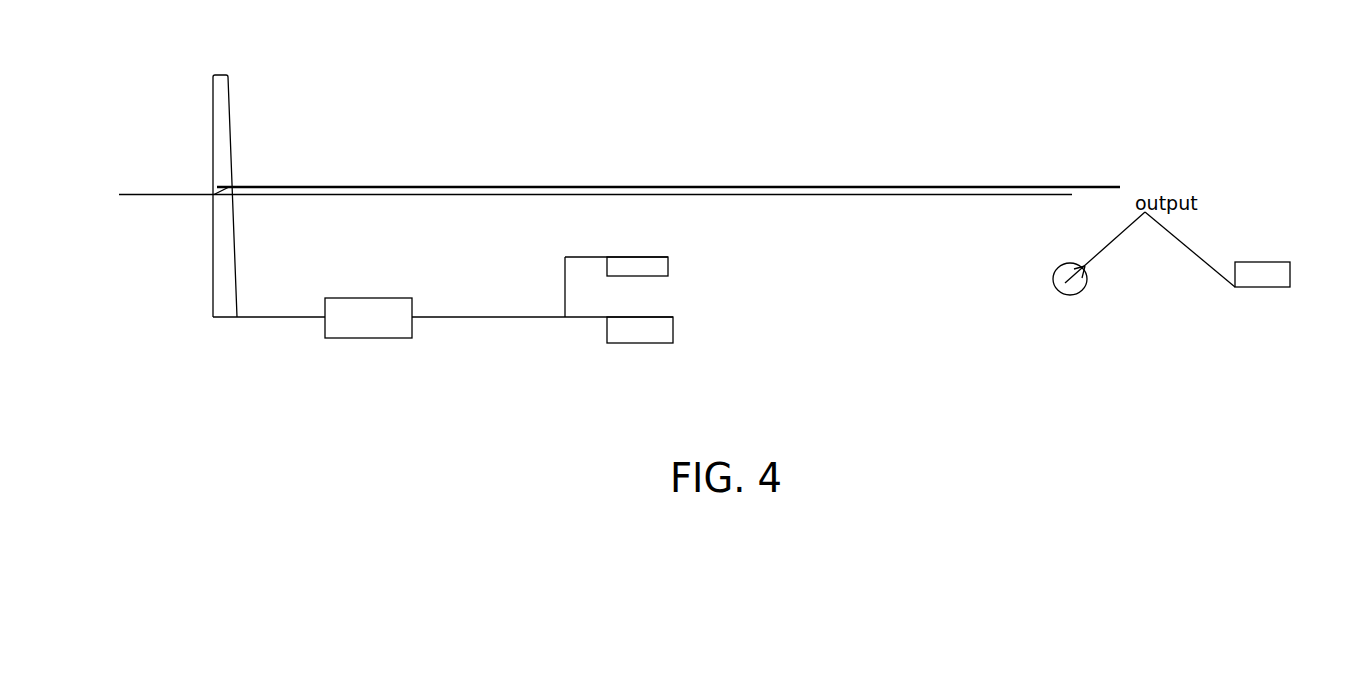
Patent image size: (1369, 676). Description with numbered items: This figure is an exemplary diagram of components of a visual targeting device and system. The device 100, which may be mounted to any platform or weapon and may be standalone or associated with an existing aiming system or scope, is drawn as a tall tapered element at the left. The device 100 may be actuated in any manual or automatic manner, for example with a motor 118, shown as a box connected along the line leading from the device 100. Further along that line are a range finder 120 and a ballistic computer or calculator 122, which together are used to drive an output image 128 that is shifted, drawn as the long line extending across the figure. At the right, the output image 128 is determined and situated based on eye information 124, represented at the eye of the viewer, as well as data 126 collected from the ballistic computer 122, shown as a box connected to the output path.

The device 100 is at (222, 170).
The motor 118 is at (397, 325).
The range finder 120 is at (622, 263).
The ballistic computer 122 is at (672, 326).
The eye information 124 is at (1081, 281).
The data 126 is at (1272, 273).
The output image 128 is at (1058, 186).